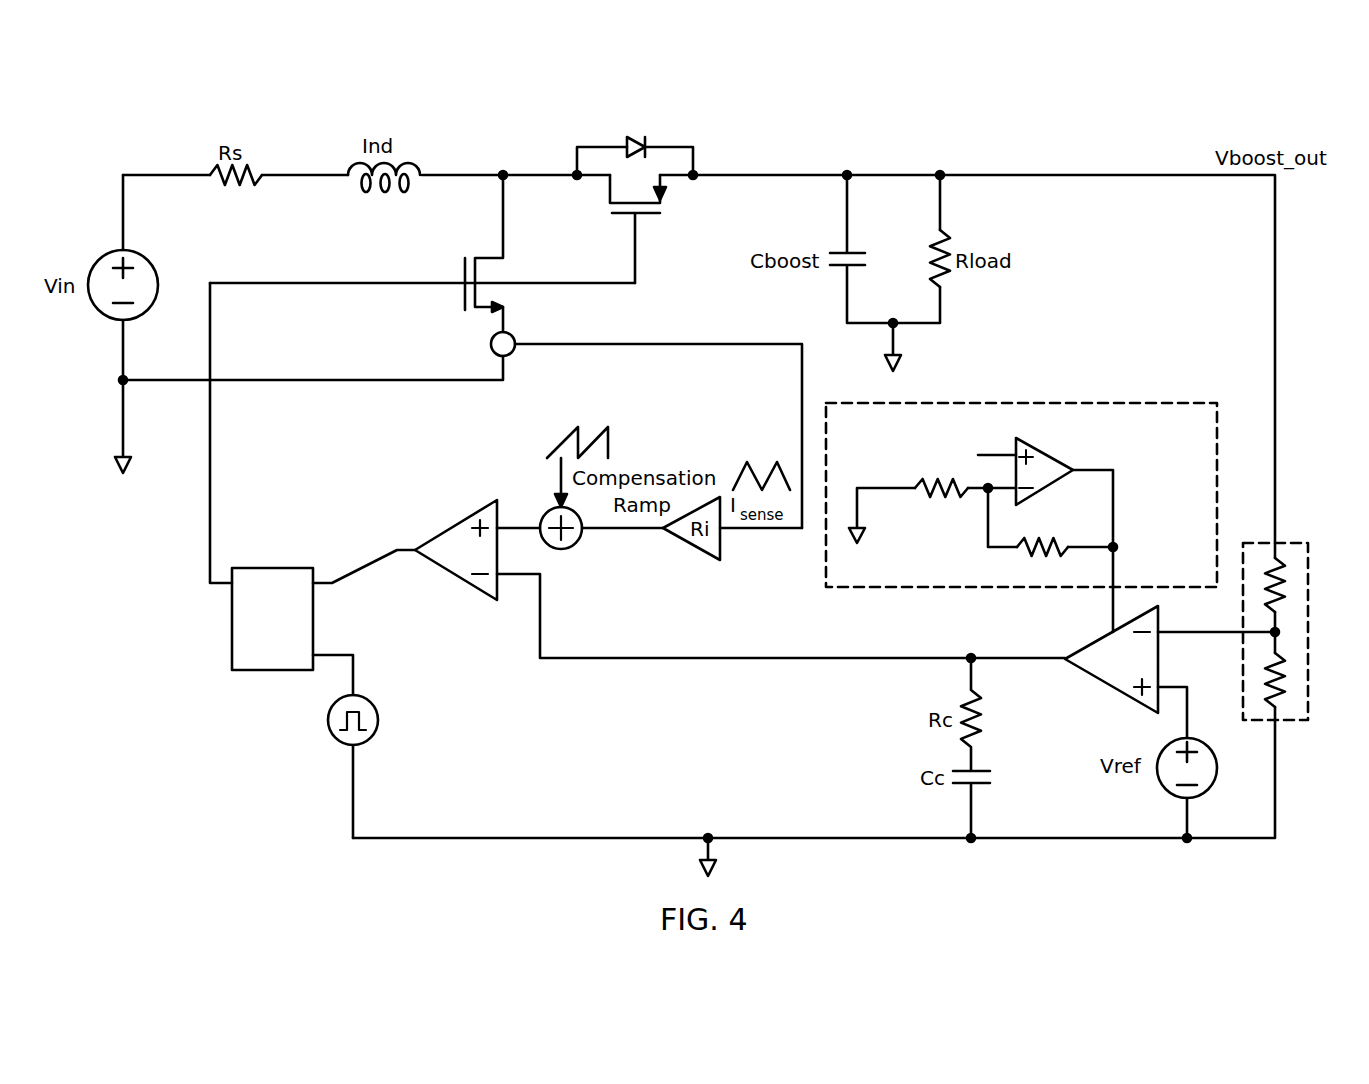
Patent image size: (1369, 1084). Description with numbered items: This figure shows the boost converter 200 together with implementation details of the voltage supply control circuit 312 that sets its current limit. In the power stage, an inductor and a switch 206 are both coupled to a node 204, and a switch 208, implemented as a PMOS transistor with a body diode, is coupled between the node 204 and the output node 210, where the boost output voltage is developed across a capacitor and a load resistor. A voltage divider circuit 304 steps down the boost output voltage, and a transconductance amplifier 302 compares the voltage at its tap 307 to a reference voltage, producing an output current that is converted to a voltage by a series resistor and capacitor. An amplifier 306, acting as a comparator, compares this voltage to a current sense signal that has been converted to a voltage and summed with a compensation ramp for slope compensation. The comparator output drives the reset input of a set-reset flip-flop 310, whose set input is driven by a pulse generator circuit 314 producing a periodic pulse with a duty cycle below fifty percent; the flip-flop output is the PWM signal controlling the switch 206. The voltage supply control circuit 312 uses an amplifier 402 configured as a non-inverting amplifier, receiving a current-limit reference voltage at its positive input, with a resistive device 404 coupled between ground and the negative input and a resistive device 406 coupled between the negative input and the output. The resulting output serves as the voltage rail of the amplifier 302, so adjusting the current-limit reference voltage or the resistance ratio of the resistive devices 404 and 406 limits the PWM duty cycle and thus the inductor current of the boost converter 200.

The boost converter 200 is at (124, 125).
The node 204 is at (503, 172).
The switch 206 is at (481, 312).
The switch 208 is at (650, 217).
The output node 210 is at (847, 172).
The amplifier 302 is at (1115, 695).
The voltage divider circuit 304 is at (1285, 545).
The amplifier 306 is at (450, 527).
The tap 307 is at (1277, 633).
The flip-flop 310 is at (268, 568).
The voltage supply control circuit 312 is at (1021, 501).
The pulse generator circuit 314 is at (378, 707).
The amplifier 402 is at (1045, 455).
The resistive device 404 is at (945, 495).
The resistive device 406 is at (1038, 540).